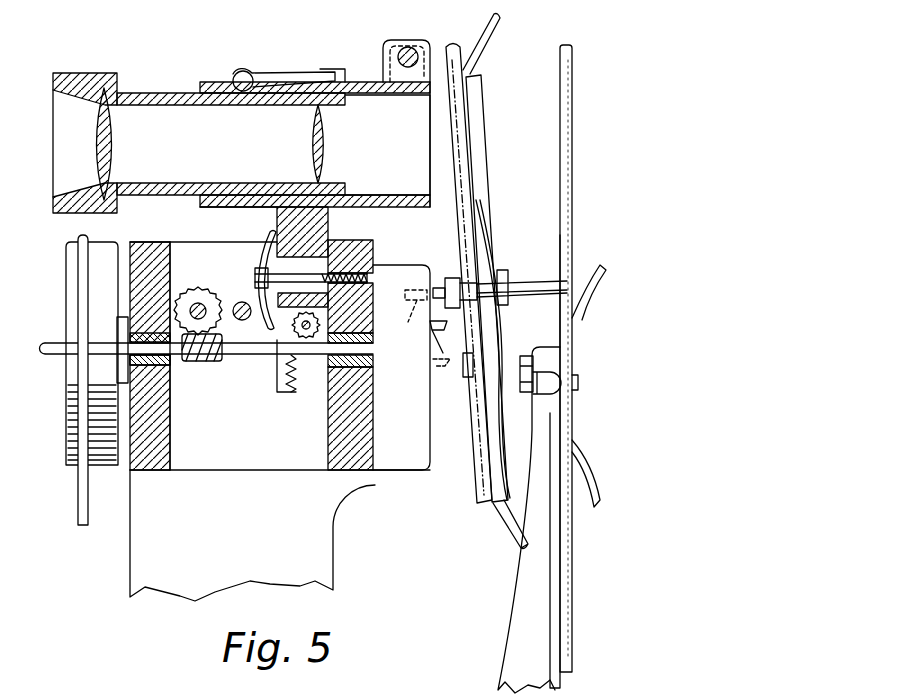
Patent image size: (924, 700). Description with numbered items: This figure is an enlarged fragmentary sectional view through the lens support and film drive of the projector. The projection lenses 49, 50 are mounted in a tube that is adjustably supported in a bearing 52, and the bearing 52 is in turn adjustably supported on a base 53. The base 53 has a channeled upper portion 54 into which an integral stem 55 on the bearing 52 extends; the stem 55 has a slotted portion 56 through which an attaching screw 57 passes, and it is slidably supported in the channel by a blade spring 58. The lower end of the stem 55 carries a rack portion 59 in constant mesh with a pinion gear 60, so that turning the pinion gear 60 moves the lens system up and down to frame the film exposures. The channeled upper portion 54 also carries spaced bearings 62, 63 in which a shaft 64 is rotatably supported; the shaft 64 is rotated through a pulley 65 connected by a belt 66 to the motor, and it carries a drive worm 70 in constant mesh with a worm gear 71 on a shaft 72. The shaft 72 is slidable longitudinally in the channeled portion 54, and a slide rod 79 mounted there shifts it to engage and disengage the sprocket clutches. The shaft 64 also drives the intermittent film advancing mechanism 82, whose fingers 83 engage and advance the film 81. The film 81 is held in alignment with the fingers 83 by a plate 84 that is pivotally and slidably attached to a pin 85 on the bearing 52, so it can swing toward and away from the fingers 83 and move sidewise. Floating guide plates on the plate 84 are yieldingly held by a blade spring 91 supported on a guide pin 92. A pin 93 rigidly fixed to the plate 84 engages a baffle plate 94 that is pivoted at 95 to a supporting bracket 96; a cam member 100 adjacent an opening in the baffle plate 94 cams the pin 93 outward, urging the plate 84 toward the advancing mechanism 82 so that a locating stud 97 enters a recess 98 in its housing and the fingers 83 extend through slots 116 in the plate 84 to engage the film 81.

The projection lens 49 is at (118, 127).
The projection lens 50 is at (303, 127).
The bearing 52 is at (380, 110).
The base 53 is at (336, 530).
The channeled upper portion 54 is at (214, 252).
The stem 55 is at (328, 213).
The slotted portion 56 is at (317, 267).
The attaching screw 57 is at (260, 268).
The blade spring 58 is at (269, 246).
The rack portion 59 is at (295, 376).
The pinion gear 60 is at (317, 318).
The bearing 62 is at (152, 410).
The bearing 63 is at (363, 362).
The shaft 64 is at (252, 360).
The pulley 65 is at (75, 397).
The belt 66 is at (80, 504).
The drive worm 70 is at (203, 360).
The worm gear 71 is at (178, 311).
The shaft 72 is at (203, 300).
The slide rod 79 is at (243, 301).
The film 81 is at (573, 89).
The intermittent film advancing mechanism 82 is at (410, 417).
The fingers 83 is at (433, 361).
The plate 84 is at (453, 177).
The pin 85 is at (411, 58).
The blade spring 91 is at (487, 231).
The guide pin 92 is at (485, 295).
The pin 93 is at (530, 275).
The baffle plate 94 is at (567, 239).
The pivot 95 is at (522, 368).
The supporting bracket 96 is at (538, 612).
The locating stud 97 is at (441, 273).
The recess 98 is at (407, 316).
The cam member 100 is at (597, 280).
The slot 116 is at (468, 353).